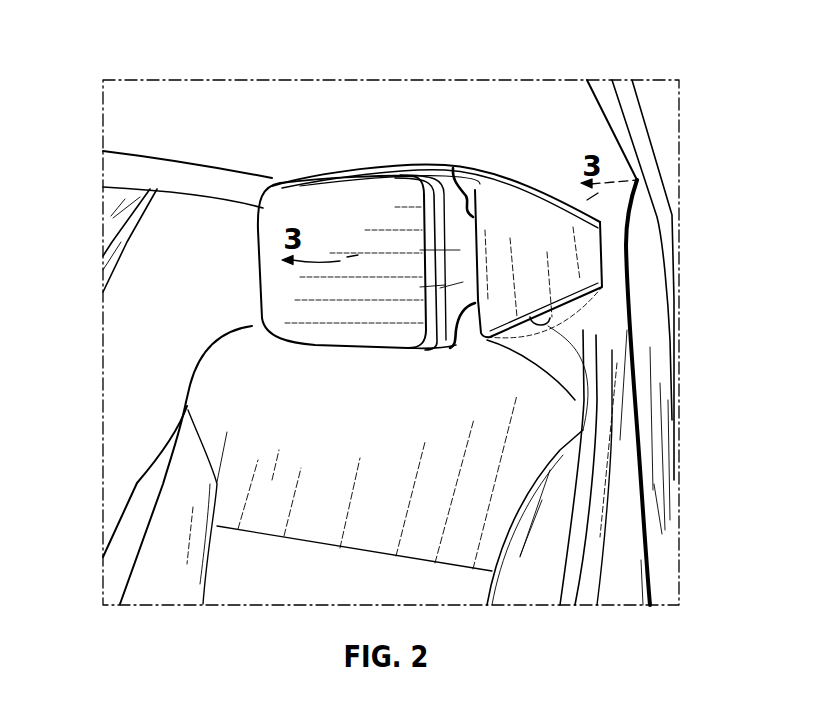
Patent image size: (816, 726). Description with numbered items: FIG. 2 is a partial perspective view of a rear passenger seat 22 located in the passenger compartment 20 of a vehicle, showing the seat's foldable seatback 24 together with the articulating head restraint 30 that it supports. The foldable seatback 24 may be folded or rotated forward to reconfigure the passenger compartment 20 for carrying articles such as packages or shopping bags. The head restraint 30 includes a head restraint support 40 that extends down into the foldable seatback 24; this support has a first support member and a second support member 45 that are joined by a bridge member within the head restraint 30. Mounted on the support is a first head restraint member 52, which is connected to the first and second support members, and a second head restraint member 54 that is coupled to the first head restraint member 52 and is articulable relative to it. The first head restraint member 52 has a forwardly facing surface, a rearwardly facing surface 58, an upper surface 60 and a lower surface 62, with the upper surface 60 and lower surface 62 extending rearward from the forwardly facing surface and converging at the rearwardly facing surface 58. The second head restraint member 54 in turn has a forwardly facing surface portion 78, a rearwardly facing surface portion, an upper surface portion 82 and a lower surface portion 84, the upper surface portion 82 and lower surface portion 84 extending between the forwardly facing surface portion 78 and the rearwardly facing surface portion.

The passenger compartment 20 is at (133, 132).
The rear passenger seat 22 is at (651, 624).
The foldable seatback 24 is at (215, 395).
The head restraint 30 is at (288, 127).
The head restraint support 40 is at (549, 342).
The second support member 45 is at (574, 334).
The first head restraint member 52 is at (603, 272).
The second head restraint member 54 is at (452, 243).
The rearwardly facing surface 58 is at (563, 243).
The upper surface 60 is at (535, 187).
The lower surface 62 is at (549, 325).
The forwardly facing surface portion 78 is at (268, 272).
The upper surface portion 82 is at (360, 181).
The lower surface portion 84 is at (457, 349).